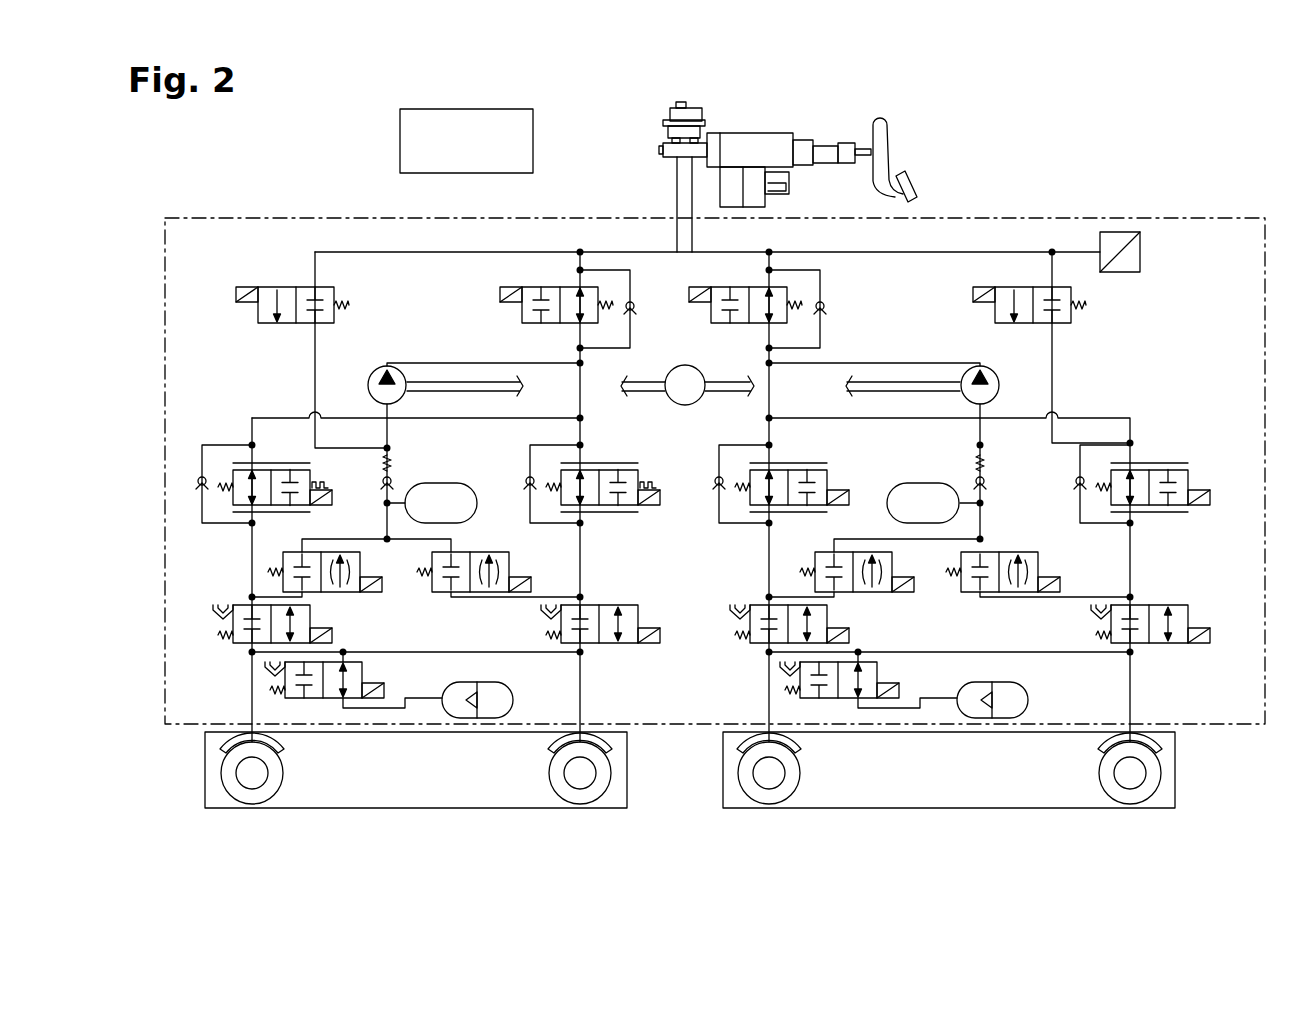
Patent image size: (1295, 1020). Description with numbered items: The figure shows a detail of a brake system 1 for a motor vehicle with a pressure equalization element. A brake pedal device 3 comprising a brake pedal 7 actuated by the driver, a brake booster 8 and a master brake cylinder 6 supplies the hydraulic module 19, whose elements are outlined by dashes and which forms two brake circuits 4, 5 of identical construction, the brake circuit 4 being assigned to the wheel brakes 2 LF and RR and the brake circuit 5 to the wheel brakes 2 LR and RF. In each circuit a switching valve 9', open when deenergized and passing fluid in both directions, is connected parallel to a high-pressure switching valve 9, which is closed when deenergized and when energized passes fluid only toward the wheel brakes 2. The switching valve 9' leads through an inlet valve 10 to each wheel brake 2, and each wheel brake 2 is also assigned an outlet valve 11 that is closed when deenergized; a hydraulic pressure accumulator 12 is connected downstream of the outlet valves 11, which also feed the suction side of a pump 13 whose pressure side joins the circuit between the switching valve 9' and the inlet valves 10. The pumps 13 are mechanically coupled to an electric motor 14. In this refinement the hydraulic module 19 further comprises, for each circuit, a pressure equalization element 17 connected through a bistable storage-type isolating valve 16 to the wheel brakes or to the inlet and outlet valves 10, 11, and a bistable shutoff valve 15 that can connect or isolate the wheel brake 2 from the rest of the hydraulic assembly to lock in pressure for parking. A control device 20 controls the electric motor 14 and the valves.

The brake system 1 is at (1212, 110).
The wheel brakes 2 is at (220, 773).
The brake pedal device 3 is at (903, 102).
The brake circuit 4 is at (1222, 262).
The brake circuit 5 is at (195, 262).
The master brake cylinder 6 is at (670, 107).
The brake pedal 7 is at (906, 186).
The brake booster 8 is at (765, 148).
The high-pressure switching valve 9 is at (642, 305).
The switching valve 9' is at (632, 305).
The inlet valve 10 is at (312, 478).
The outlet valve 11 is at (362, 562).
The hydraulic pressure accumulator 12 is at (441, 483).
The pump 13 is at (372, 372).
The electric motor 14 is at (669, 399).
The shutoff valve 15 is at (312, 613).
The storage-type isolating valve 16 is at (364, 672).
The pressure equalization element 17 is at (512, 685).
The hydraulic module 19 is at (1117, 200).
The control device 20 is at (533, 160).